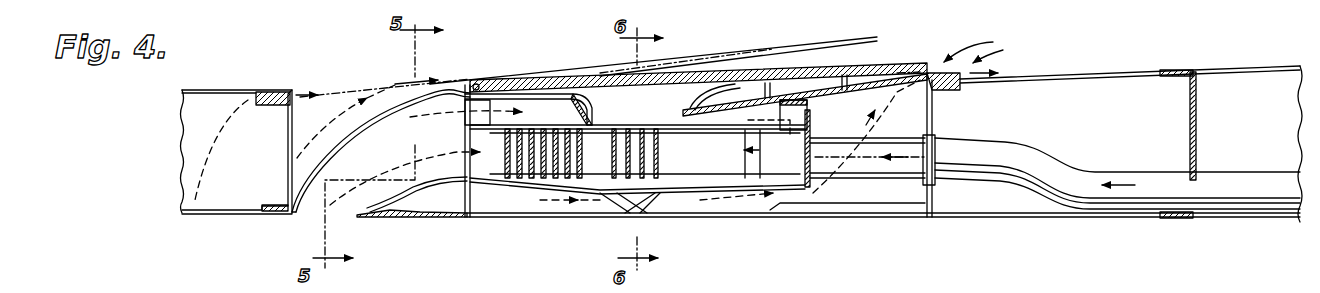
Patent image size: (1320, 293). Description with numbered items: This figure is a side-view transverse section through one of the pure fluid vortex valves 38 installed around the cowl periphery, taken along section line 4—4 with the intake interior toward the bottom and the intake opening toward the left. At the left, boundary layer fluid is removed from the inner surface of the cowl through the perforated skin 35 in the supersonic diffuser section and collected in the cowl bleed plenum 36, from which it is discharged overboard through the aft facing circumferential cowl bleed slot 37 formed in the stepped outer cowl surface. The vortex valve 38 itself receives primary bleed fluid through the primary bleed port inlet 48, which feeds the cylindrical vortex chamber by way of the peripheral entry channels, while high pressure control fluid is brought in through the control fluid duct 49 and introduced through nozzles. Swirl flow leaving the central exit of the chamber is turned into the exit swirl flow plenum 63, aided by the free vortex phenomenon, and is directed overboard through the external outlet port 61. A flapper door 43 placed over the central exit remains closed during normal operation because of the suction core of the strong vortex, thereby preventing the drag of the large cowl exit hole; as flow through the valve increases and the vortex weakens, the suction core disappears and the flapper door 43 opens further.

The section line 4— 4 is at (685, 115).
The perforated skin 35 is at (212, 214).
The cowl bleed plenum 36 is at (256, 180).
The aft facing circumferential cowl bleed slot 37 is at (322, 68).
The vortex valve 38 is at (597, 160).
The flapper door 43 is at (750, 43).
The primary bleed port inlet 48 is at (316, 229).
The control fluid duct 49 is at (1070, 177).
The external outlet port 61 is at (986, 53).
The exit swirl flow plenum 63 is at (756, 98).